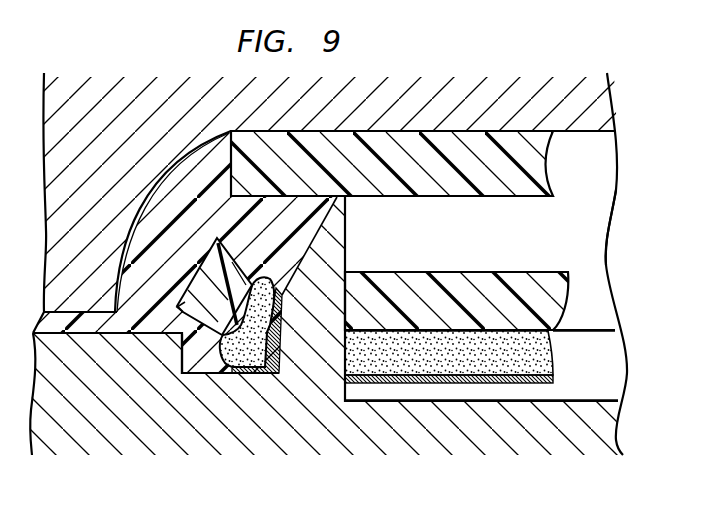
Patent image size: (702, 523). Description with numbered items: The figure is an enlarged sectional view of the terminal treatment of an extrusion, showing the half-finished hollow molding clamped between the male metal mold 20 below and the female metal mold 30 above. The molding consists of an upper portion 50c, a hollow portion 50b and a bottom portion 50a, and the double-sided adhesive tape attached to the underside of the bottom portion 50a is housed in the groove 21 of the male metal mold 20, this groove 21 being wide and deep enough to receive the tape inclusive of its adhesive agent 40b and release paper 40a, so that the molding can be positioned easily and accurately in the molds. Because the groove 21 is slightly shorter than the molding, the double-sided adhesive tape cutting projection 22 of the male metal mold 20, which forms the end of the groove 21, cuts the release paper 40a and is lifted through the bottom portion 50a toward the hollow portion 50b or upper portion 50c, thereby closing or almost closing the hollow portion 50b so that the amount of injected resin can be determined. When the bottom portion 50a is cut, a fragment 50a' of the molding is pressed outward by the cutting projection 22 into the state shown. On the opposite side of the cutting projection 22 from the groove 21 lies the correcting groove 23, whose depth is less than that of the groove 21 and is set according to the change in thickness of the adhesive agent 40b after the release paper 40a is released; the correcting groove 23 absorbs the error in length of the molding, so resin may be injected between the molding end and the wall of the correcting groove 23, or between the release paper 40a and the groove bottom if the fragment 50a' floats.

The female metal mold 30 is at (592, 94).
The upper portion 50c is at (542, 165).
The hollow portion 50b is at (600, 205).
The bottom portion 50a is at (480, 283).
The fragment 50a' is at (180, 368).
The double-sided adhesive tape cutting projection 22 is at (337, 254).
The male metal mold 20 is at (611, 428).
The groove 21 is at (626, 376).
The correcting groove 23 is at (190, 377).
The adhesive agent 40b is at (551, 344).
The release paper 40a is at (547, 384).